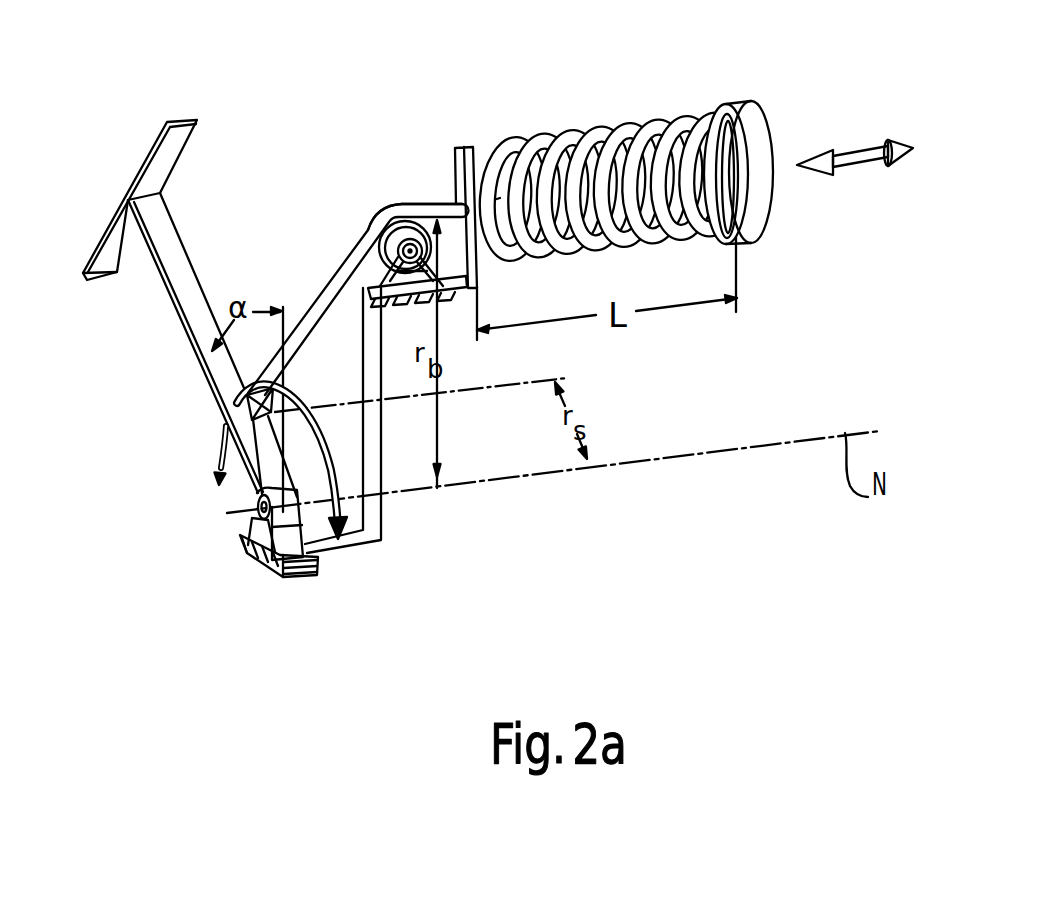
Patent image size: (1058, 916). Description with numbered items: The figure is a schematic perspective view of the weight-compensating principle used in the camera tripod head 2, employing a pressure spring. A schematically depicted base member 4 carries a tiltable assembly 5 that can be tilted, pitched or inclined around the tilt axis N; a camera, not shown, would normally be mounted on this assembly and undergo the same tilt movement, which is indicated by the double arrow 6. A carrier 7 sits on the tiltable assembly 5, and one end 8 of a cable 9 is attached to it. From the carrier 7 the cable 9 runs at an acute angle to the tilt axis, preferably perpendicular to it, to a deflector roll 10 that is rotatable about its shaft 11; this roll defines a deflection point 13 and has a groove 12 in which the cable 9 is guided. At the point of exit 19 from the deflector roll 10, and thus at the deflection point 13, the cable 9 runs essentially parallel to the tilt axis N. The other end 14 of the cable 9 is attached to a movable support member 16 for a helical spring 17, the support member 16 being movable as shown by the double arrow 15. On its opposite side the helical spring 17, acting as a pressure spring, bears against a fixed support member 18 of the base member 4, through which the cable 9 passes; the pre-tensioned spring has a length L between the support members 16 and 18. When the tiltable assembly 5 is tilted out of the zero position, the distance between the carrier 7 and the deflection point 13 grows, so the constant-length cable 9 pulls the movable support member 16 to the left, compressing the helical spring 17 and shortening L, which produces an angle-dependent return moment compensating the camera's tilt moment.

The camera tripod head 2 is at (120, 373).
The base member 4 is at (299, 578).
The tiltable assembly 5 is at (163, 288).
The double arrow 6 is at (340, 460).
The carrier 7 is at (226, 488).
The end of cable 8 is at (240, 396).
The cable 9 is at (346, 262).
The deflector roll 10 is at (381, 229).
The shaft 11 is at (414, 252).
The groove 12 is at (364, 289).
The deflection point 13 is at (382, 198).
The other end of cable 14 is at (728, 158).
The double arrow 15 is at (860, 158).
The movable support member 16 is at (767, 217).
The helical spring 17 is at (602, 133).
The fixed support member 18 is at (463, 148).
The point of exit 19 is at (418, 204).